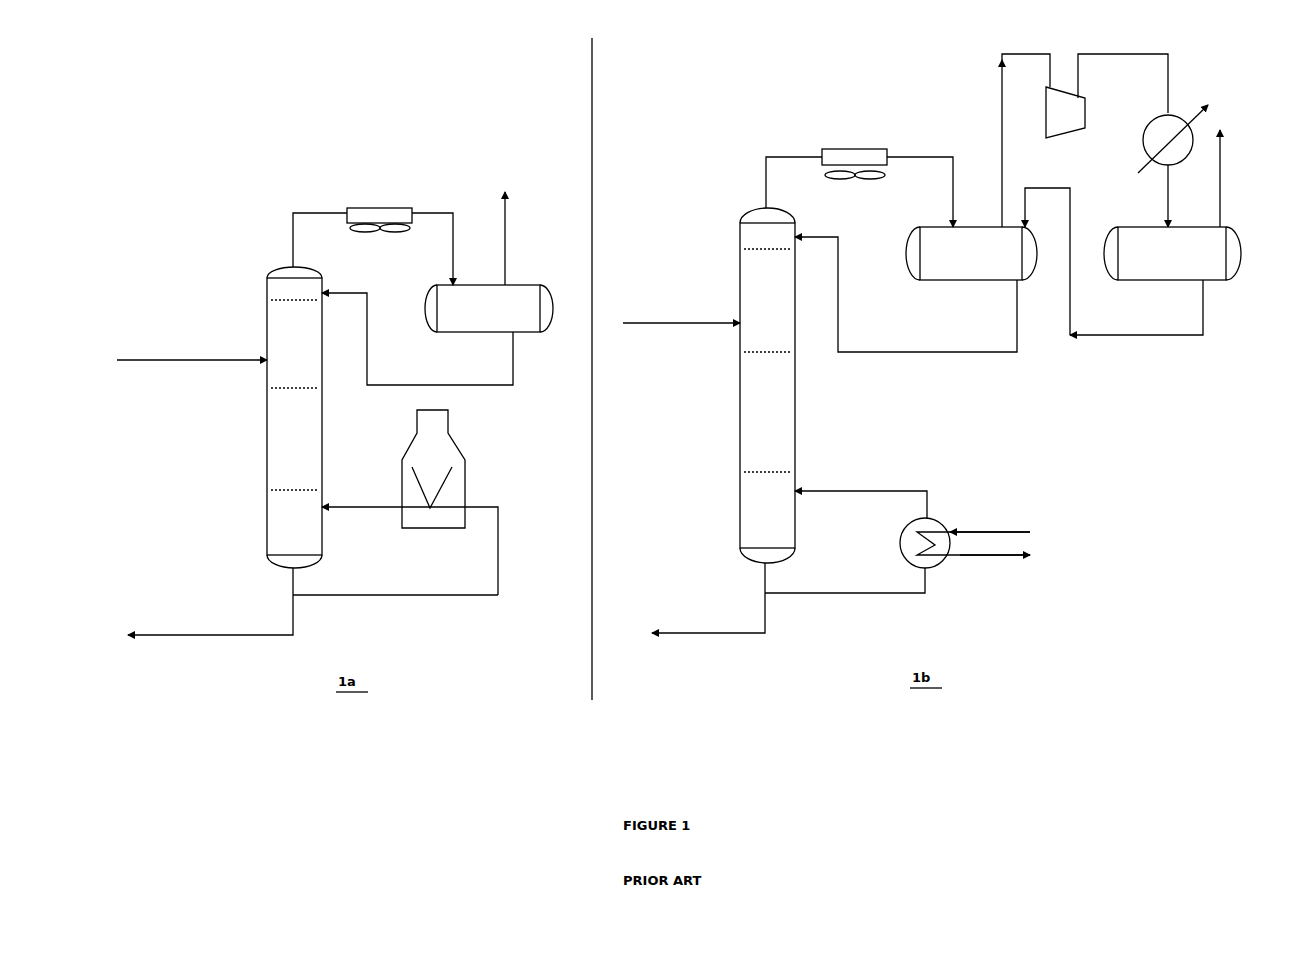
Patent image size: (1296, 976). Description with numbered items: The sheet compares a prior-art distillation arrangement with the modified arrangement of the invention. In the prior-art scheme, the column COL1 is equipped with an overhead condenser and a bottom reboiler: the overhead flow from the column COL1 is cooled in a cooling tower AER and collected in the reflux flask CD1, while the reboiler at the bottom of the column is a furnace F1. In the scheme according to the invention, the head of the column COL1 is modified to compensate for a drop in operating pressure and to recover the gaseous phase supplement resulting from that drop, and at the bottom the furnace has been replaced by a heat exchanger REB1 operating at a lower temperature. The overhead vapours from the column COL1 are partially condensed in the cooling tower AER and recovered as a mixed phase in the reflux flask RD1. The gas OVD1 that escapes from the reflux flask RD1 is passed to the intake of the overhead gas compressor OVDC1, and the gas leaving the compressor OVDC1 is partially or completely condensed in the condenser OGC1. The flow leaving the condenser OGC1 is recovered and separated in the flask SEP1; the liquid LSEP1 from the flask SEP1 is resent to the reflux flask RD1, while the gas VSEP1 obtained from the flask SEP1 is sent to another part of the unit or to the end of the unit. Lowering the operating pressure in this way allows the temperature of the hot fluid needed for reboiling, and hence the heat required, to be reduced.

In FIG. 1a, the column COL1 is at (219, 451).
In FIG. 1b, the column COL1 is at (709, 420).
In FIG. 1a, the cooling tower AER is at (352, 218).
In FIG. 1b, the cooling tower AER is at (826, 166).
In FIG. 1a, the reflux flask CD1 is at (437, 288).
In FIG. 1a, the furnace F1 is at (395, 502).
In FIG. 1b, the reflux flask RD1 is at (916, 254).
In FIG. 1b, the gas OVD1 is at (996, 140).
In FIG. 1b, the overhead gas compressor OVDC1 is at (1068, 123).
In FIG. 1b, the condenser OGC1 is at (1152, 113).
In FIG. 1b, the flask SEP1 is at (1172, 222).
In FIG. 1b, the gas VSEP1 is at (1253, 178).
In FIG. 1b, the liquid LSEP1 is at (1114, 275).
In FIG. 1b, the reboiler REB1 is at (897, 542).